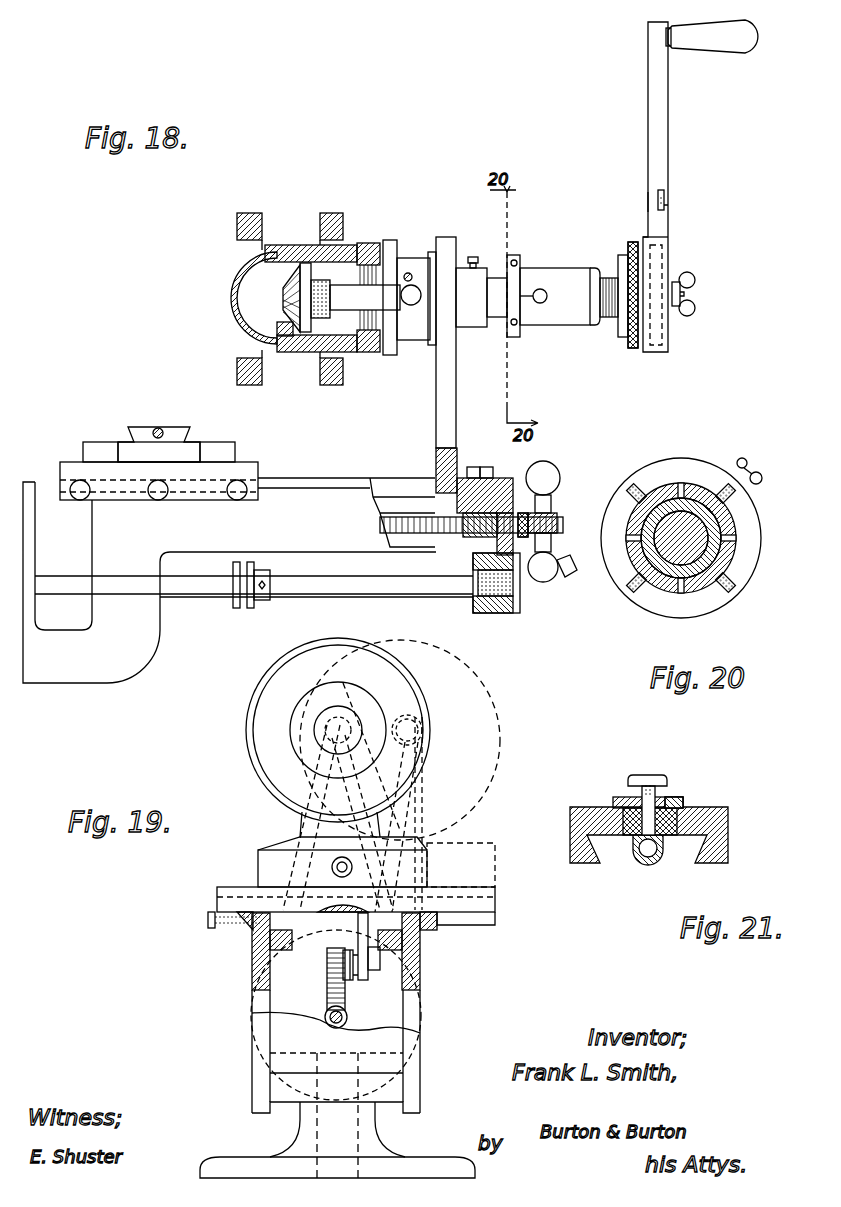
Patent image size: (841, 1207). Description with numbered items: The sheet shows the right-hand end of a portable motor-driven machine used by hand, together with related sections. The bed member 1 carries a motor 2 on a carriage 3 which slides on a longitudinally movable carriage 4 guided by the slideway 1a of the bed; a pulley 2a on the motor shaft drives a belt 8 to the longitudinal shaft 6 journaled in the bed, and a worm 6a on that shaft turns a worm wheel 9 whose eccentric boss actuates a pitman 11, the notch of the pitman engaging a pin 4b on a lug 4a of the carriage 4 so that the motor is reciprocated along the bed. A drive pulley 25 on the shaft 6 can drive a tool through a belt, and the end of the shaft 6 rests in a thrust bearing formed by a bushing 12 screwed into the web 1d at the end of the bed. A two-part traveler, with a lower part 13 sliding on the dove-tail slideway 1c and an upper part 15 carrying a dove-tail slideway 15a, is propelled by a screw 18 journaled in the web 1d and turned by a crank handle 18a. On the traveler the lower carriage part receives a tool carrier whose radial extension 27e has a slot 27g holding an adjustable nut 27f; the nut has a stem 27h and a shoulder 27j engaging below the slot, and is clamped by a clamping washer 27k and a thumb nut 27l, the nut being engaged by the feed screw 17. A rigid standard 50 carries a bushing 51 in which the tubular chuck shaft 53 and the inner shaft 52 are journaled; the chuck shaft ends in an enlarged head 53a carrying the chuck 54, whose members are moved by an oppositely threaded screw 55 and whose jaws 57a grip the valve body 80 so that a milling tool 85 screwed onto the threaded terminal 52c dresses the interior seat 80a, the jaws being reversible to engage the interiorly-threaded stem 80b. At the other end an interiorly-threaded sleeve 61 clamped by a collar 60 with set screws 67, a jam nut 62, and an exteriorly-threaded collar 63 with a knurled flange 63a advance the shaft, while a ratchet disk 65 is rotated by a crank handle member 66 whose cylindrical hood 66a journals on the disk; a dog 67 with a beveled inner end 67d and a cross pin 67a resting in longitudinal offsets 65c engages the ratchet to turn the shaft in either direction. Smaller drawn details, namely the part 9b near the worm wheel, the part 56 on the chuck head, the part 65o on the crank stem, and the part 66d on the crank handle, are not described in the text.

In FIG. 18, the bed member 1 is at (248, 582).
In FIG. 19, the bed member 1 is at (422, 950).
In FIG. 19, the slideway 1a is at (253, 925).
In FIG. 18, the dove-tail slideway 1c is at (329, 480).
In FIG. 18, the web 1d is at (497, 540).
In FIG. 19, the motor 2 is at (430, 758).
In FIG. 19, the pulley 2a is at (340, 722).
In FIG. 19, the carriage 3 is at (276, 850).
In FIG. 19, the longitudinally movable carriage 4 is at (232, 896).
In FIG. 19, the lug 4a is at (346, 910).
In FIG. 19, the pin 4b is at (337, 1054).
In FIG. 18, the shaft 6 is at (195, 592).
In FIG. 19, the shaft 6 is at (348, 1016).
In FIG. 19, the worm 6a is at (325, 1017).
In FIG. 19, the belt 8 is at (366, 785).
In FIG. 19, the worm wheel 9 is at (327, 985).
In FIG. 19, the screw block 9b is at (420, 971).
In FIG. 19, the pitman 11 is at (343, 939).
In FIG. 18, the bushing 12 is at (478, 592).
In FIG. 18, the lower traveler part 13 is at (258, 474).
In FIG. 18, the upper traveler part 15 is at (225, 447).
In FIG. 18, the dove-tail slideway 15a is at (185, 440).
In FIG. 18, the feed screw 17 is at (156, 429).
In FIG. 21, the feed screw 17 is at (646, 860).
In FIG. 18, the screw 18 is at (410, 536).
In FIG. 18, the crank handle 18a is at (558, 483).
In FIG. 18, the drive pulley 25 is at (240, 608).
In FIG. 21, the radial extension 27e is at (729, 812).
In FIG. 21, the nut 27f is at (636, 856).
In FIG. 21, the slot 27g is at (570, 814).
In FIG. 21, the stem 27h is at (673, 797).
In FIG. 21, the shoulder 27j is at (680, 822).
In FIG. 21, the clamping washer 27k is at (618, 797).
In FIG. 21, the thumb nut 27l is at (668, 781).
In FIG. 18, the standard 50 is at (436, 431).
In FIG. 18, the bushing 51 is at (478, 327).
In FIG. 18, the shaft 52 is at (348, 305).
In FIG. 20, the shaft 52 is at (672, 516).
In FIG. 18, the threaded terminal 52c is at (306, 352).
In FIG. 18, the chuck shaft 53 is at (497, 278).
In FIG. 20, the chuck shaft 53 is at (716, 528).
In FIG. 18, the enlarged head 53a is at (418, 335).
In FIG. 18, the chuck 54 is at (407, 272).
In FIG. 18, the screw 55 is at (411, 285).
In FIG. 18, the set screw 56 is at (472, 257).
In FIG. 18, the jaws 57a is at (390, 356).
In FIG. 18, the collar 60 is at (513, 337).
In FIG. 20, the collar 60 is at (752, 560).
In FIG. 18, the interiorly-threaded sleeve 61 is at (561, 327).
In FIG. 20, the interiorly-threaded sleeve 61 is at (690, 483).
In FIG. 18, the jam nut 62 is at (622, 340).
In FIG. 18, the exteriorly-threaded collar 63 is at (610, 320).
In FIG. 18, the knurled flange 63a is at (633, 350).
In FIG. 18, the ratchet disk 65 is at (668, 341).
In FIG. 18, the longitudinal offsets 65c is at (658, 204).
In FIG. 18, the pin head 65o is at (665, 197).
In FIG. 18, the crank handle member 66 is at (668, 127).
In FIG. 18, the cylindrical hood 66a is at (670, 252).
In FIG. 18, the wing nut 66d is at (696, 297).
In FIG. 18, the dog / set screws 67 is at (518, 266).
In FIG. 20, the dog / set screws 67 is at (632, 478).
In FIG. 18, the cross pin 67a is at (670, 211).
In FIG. 18, the inner end of dog 67d is at (656, 196).
In FIG. 18, the valve body 80 is at (236, 276).
In FIG. 18, the interior seat 80a is at (242, 312).
In FIG. 18, the interiorly-threaded stem 80b is at (367, 247).
In FIG. 18, the milling tool 85 is at (283, 297).